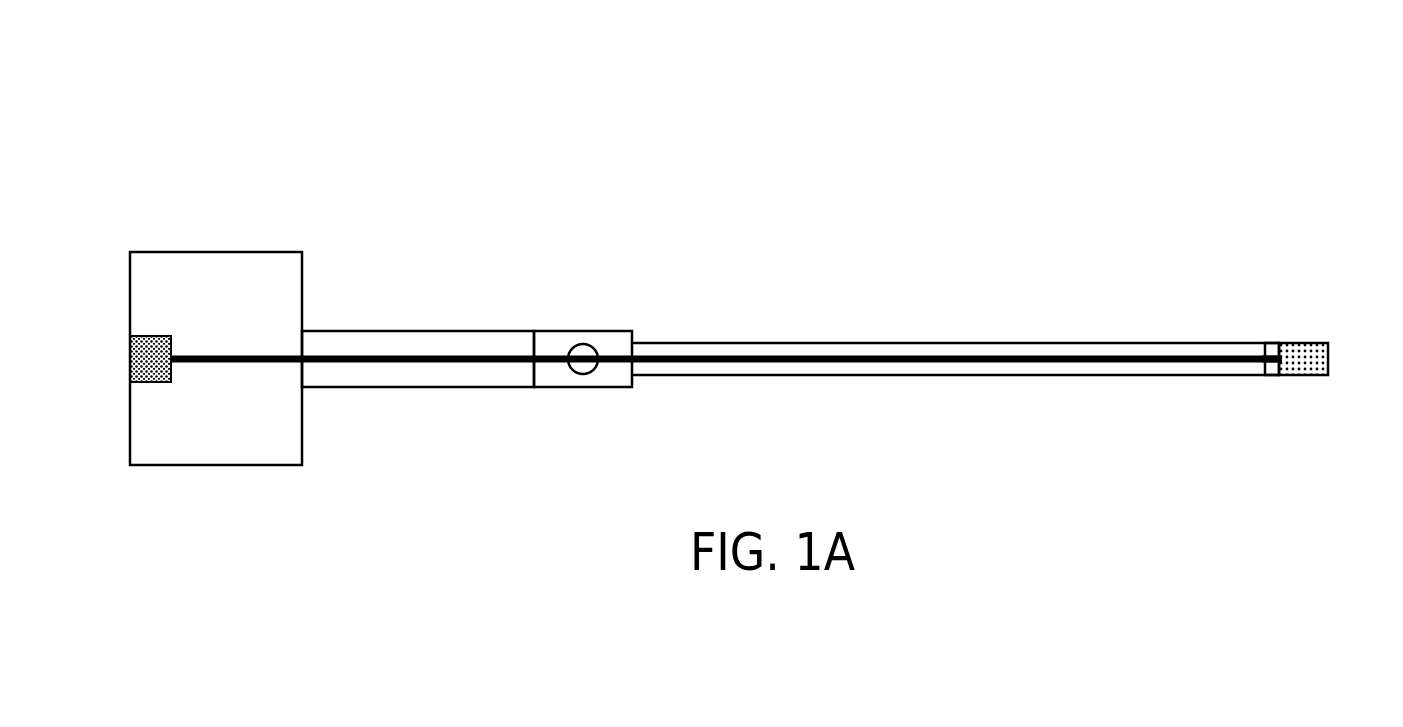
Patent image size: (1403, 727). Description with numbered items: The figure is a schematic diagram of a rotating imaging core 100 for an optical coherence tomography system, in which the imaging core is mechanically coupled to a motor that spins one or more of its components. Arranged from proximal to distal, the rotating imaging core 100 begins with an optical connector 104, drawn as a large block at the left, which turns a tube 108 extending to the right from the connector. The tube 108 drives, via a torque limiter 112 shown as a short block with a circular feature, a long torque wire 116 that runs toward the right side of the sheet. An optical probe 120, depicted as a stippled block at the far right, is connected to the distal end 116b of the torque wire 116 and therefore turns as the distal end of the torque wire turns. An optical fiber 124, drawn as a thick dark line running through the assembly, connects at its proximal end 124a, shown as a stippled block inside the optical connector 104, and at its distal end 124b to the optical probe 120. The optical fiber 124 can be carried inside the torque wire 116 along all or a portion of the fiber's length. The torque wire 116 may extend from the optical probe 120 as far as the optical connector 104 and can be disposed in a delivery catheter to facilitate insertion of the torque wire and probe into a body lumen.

The rotating imaging core 100 is at (310, 104).
The optical connector 104 is at (270, 242).
The tube 108 is at (511, 320).
The torque limiter 112 is at (617, 331).
The torque wire 116 is at (785, 343).
The distal end of torque wire 116b is at (1273, 343).
The optical probe 120 is at (1303, 343).
The optical fiber 124 is at (920, 364).
The proximal end of optical fiber 124a is at (150, 383).
The distal end of optical fiber 124b is at (1273, 375).